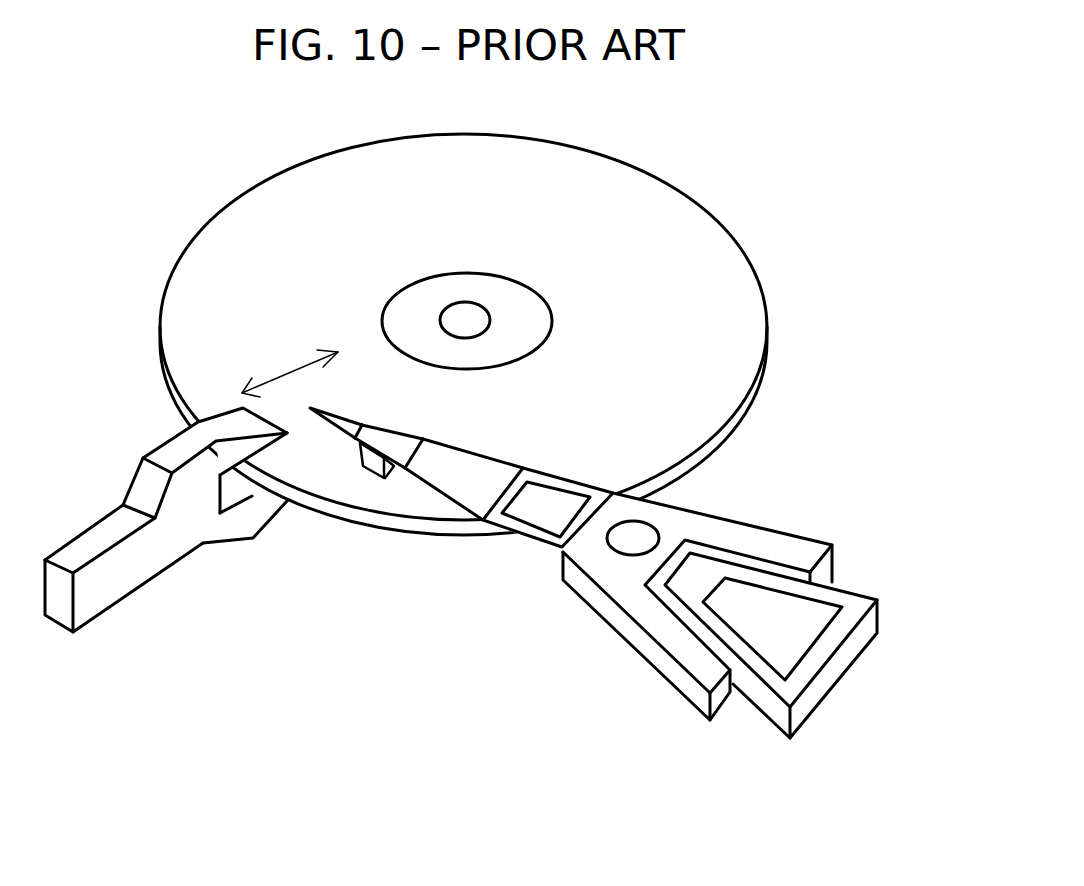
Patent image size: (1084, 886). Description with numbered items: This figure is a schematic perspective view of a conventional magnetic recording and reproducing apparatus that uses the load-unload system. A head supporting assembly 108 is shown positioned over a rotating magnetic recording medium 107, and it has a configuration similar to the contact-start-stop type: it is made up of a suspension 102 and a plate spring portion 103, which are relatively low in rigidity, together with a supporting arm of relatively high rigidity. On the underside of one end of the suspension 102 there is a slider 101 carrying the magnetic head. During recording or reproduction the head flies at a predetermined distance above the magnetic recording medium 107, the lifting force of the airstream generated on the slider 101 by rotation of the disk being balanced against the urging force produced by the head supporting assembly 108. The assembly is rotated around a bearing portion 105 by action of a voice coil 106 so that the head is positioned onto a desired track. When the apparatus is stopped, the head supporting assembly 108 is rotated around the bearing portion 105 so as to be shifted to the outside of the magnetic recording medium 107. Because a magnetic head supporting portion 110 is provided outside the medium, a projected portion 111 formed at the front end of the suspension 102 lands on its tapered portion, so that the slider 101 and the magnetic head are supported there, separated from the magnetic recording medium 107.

The slider 101 is at (375, 456).
The suspension 102 is at (449, 465).
The plate spring portion 103 is at (560, 482).
The bearing portion 105 is at (633, 538).
The voice coil 106 is at (820, 647).
The magnetic recording medium 107 is at (623, 223).
The head supporting assembly 108 is at (626, 418).
The magnetic head supporting portion 110 is at (233, 430).
The projected portion 111 is at (355, 422).